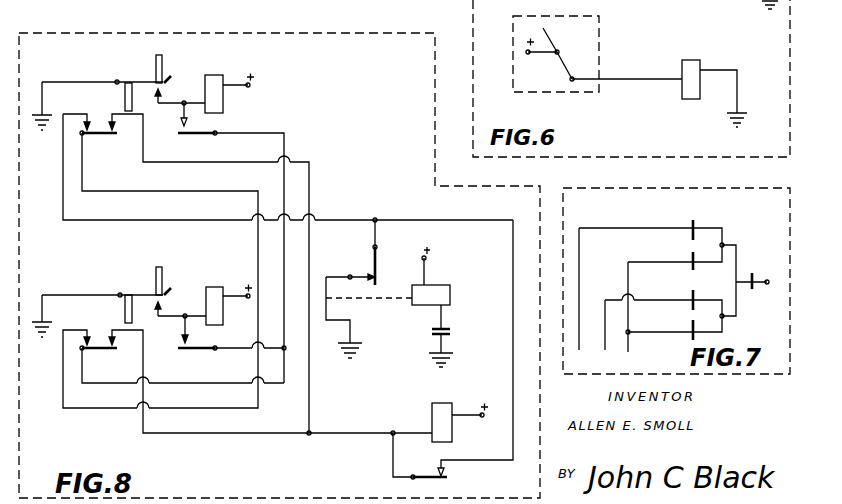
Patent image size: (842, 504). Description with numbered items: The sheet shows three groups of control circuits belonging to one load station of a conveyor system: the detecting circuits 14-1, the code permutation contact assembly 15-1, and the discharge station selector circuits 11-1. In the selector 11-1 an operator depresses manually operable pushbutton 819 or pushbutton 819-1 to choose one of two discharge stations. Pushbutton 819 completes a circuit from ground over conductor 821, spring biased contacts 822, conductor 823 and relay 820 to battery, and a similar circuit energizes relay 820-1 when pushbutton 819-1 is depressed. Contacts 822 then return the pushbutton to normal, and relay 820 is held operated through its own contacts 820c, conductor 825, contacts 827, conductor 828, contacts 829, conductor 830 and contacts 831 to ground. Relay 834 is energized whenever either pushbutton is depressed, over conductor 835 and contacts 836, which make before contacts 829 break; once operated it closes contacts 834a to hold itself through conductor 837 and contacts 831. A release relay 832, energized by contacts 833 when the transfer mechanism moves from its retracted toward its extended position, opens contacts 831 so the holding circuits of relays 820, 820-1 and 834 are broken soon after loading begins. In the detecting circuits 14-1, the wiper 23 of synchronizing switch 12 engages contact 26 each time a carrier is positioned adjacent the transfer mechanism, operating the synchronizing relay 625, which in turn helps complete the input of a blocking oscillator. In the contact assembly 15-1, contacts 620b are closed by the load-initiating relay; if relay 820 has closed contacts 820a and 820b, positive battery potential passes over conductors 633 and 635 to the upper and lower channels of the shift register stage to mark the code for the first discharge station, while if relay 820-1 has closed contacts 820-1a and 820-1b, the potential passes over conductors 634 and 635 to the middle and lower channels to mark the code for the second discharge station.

In FIG. 8, the discharge station selector circuits 11-1 is at (365, 33).
In FIG. 8, the conductor 821 is at (55, 56).
In FIG. 8, the pushbutton 819 is at (157, 55).
In FIG. 8, the contacts 822 is at (168, 82).
In FIG. 8, the relay 820 is at (215, 75).
In FIG. 8, the conductor 823 is at (161, 99).
In FIG. 8, the contacts 829 is at (93, 101).
In FIG. 8, the contacts 836 is at (128, 142).
In FIG. 8, the contacts 820c is at (178, 133).
In FIG. 8, the conductor 825 is at (237, 133).
In FIG. 8, the conductor 830 is at (63, 206).
In FIG. 8, the conductor 828 is at (158, 191).
In FIG. 8, the pushbutton 819-1 is at (160, 267).
In FIG. 8, the relay 820-1 is at (216, 287).
In FIG. 8, the contacts 827 is at (94, 312).
In FIG. 8, the conductor 835 is at (370, 433).
In FIG. 8, the contacts 831 is at (372, 275).
In FIG. 8, the release relay 832 is at (450, 302).
In FIG. 8, the contacts 833 is at (434, 334).
In FIG. 8, the conductor 837 is at (513, 362).
In FIG. 8, the relay 834 is at (435, 403).
In FIG. 8, the contacts 834a is at (447, 471).
In FIG. 6, the detecting circuits 14-1 is at (473, 10).
In FIG. 6, the synchronizing switch 12 is at (513, 46).
In FIG. 6, the wiper 23 is at (551, 42).
In FIG. 6, the contact 26 is at (573, 78).
In FIG. 6, the synchronizing relay 625 is at (682, 60).
In FIG. 7, the code permutation contact assembly 15-1 is at (705, 189).
In FIG. 7, the contacts 820a is at (692, 222).
In FIG. 7, the contacts 820b is at (691, 261).
In FIG. 7, the contacts 620b is at (751, 276).
In FIG. 7, the contacts 820-1a is at (691, 298).
In FIG. 7, the contacts 820-1b is at (691, 333).
In FIG. 7, the conductor 633 is at (579, 350).
In FIG. 7, the conductor 634 is at (605, 350).
In FIG. 7, the conductor 635 is at (628, 352).